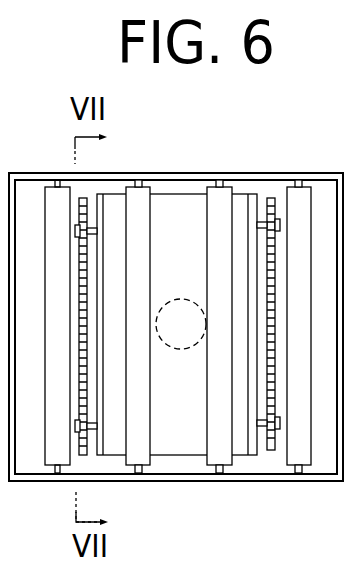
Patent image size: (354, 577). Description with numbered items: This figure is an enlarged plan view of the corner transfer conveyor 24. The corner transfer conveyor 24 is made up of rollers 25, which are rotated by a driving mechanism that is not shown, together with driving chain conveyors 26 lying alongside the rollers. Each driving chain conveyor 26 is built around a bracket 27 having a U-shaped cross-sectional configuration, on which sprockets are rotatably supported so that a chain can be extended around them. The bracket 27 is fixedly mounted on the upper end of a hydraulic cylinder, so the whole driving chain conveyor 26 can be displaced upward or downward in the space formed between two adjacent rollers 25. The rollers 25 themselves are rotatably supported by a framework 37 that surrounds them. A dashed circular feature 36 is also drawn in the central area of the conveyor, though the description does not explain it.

The corner transfer conveyor 24 is at (254, 166).
The rollers 25 is at (143, 191).
The driving chain conveyor 26 is at (83, 190).
The bracket 27 is at (175, 203).
The opening 36 is at (176, 350).
The framework 37 is at (26, 172).